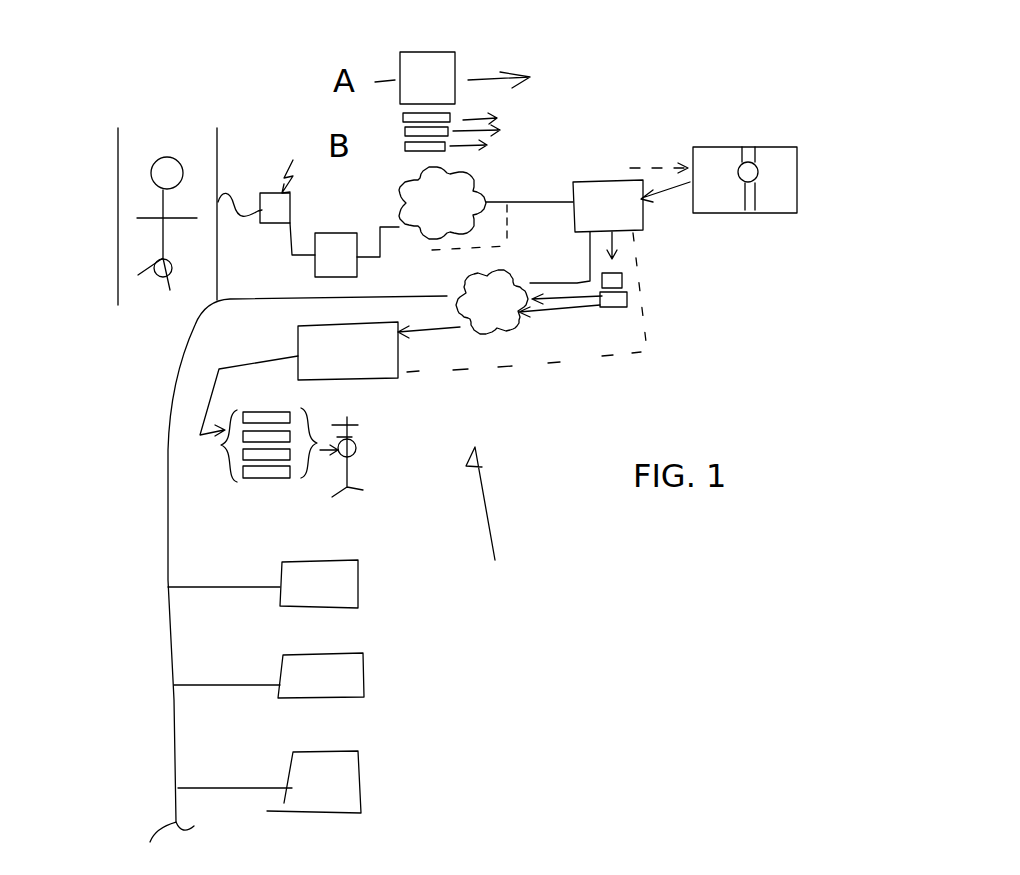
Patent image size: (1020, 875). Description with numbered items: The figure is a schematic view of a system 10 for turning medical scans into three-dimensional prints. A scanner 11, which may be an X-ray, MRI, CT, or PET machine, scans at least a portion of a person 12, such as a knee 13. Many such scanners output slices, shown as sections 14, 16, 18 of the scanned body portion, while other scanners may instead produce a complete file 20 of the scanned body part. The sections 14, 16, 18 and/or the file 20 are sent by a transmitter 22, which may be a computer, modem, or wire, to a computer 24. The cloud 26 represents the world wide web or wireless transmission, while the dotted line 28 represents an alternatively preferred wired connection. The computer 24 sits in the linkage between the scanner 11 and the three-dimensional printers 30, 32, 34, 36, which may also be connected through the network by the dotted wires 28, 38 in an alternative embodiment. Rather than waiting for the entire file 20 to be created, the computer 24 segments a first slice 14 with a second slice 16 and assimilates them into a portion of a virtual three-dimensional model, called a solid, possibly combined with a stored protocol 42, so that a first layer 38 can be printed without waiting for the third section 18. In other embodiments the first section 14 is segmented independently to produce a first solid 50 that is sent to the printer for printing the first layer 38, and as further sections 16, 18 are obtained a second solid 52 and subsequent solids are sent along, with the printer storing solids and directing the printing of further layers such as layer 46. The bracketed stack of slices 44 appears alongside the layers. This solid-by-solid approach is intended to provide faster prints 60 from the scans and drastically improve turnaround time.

The system 10 is at (509, 529).
The scanner 11 is at (269, 166).
The person 12 is at (157, 235).
The knee 13 is at (173, 267).
The section 14 is at (324, 209).
The section 16 is at (405, 152).
The section 18 is at (404, 127).
The file 20 is at (437, 67).
The transmitter 22 is at (345, 232).
The computer 24 is at (612, 178).
The cloud 26 is at (467, 190).
The dotted line 28 is at (507, 232).
The 3D printer 30 is at (380, 380).
The 3D printer 32 is at (343, 598).
The 3D printer 34 is at (352, 680).
The 3D printer 36 is at (340, 788).
The first layer 38 is at (592, 360).
The stored protocol 42 is at (802, 177).
The data stack 44 is at (248, 438).
The layer 46 is at (282, 408).
The first solid 50 is at (627, 298).
The second solid 52 is at (622, 273).
The prints 60 is at (350, 477).